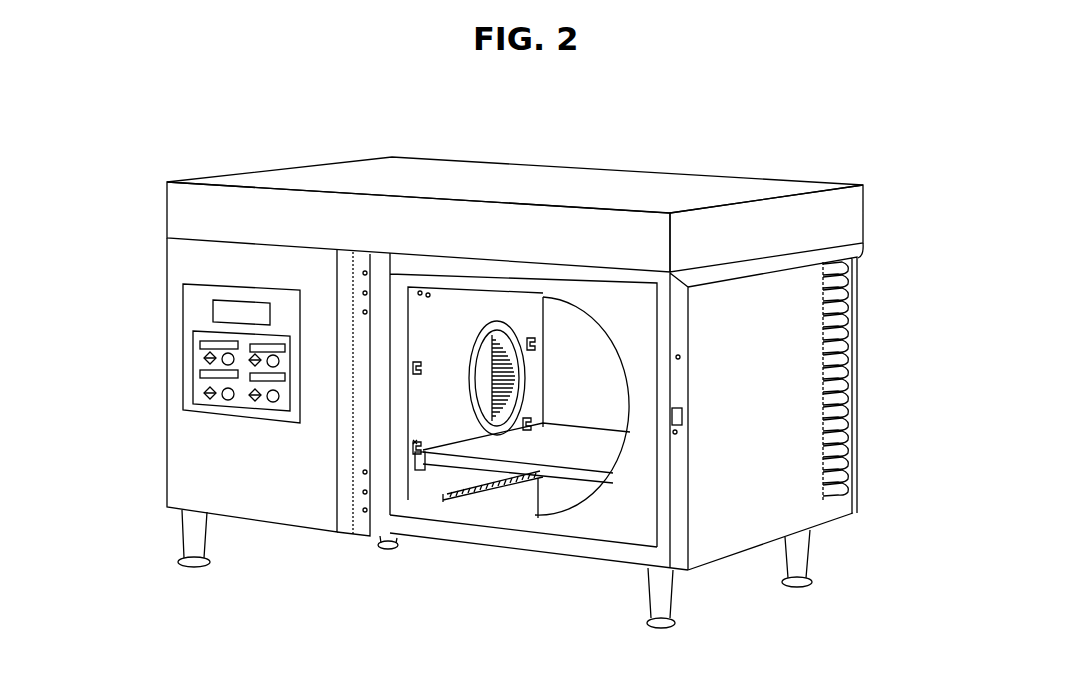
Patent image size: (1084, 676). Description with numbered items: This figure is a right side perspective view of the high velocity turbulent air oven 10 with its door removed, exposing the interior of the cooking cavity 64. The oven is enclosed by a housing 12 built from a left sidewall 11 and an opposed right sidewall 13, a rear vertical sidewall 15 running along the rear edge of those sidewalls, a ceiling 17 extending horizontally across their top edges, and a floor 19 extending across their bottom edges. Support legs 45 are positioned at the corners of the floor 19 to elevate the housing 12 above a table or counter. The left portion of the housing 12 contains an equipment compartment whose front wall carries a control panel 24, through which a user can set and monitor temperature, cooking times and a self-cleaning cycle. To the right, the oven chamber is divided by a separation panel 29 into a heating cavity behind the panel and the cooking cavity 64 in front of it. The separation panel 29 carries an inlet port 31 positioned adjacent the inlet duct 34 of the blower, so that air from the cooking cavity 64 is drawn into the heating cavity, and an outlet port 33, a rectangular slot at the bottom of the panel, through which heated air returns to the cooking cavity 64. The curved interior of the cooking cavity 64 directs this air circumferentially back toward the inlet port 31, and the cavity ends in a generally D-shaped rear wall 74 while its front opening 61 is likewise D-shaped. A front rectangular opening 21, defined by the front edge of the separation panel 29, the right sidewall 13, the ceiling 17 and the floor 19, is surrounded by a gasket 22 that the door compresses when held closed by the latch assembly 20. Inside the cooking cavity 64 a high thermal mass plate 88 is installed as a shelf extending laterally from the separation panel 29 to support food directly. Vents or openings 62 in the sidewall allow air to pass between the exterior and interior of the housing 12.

The high velocity turbulent air oven 10 is at (775, 130).
The left sidewall 11 is at (208, 177).
The housing 12 is at (138, 227).
The right sidewall 13 is at (777, 317).
The rear vertical sidewall 15 is at (573, 168).
The ceiling 17 is at (633, 187).
The floor 19 is at (732, 555).
The latch assembly 20 is at (678, 412).
The front rectangular opening 21 is at (635, 533).
The gasket 22 is at (575, 265).
The control panel 24 is at (193, 295).
The separation panel 29 is at (440, 332).
The inlet port 31 is at (503, 333).
The outlet port 33 is at (415, 470).
The inlet duct 34 is at (453, 503).
The support legs 45 is at (192, 570).
The front opening 61 is at (578, 508).
The vents or openings 62 is at (830, 500).
The cooking cavity 64 is at (513, 515).
The rear wall 74 is at (607, 392).
The high thermal mass plates 88 is at (538, 482).